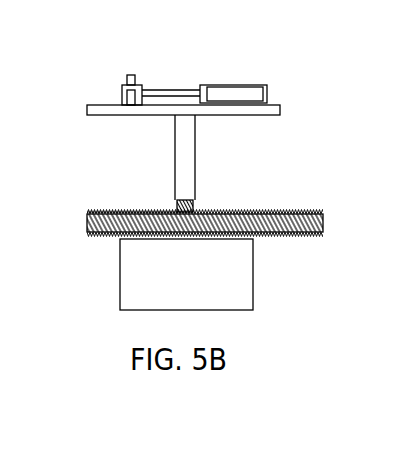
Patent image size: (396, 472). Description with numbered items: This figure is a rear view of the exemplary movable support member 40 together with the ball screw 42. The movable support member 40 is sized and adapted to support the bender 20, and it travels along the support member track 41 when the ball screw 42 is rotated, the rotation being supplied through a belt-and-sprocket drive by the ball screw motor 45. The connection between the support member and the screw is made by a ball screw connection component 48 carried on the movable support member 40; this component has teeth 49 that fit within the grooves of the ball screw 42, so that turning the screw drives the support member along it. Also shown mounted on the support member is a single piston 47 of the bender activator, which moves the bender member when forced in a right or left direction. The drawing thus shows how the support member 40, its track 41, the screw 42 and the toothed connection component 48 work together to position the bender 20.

The bender 20 is at (117, 93).
The movable support member 40 is at (183, 182).
The support member track 41 is at (138, 273).
The ball screw 42 is at (302, 237).
The ball screw motor 45 is at (277, 110).
The piston 47 is at (225, 92).
The ball screw connection component 48 is at (193, 205).
The teeth 49 is at (172, 205).